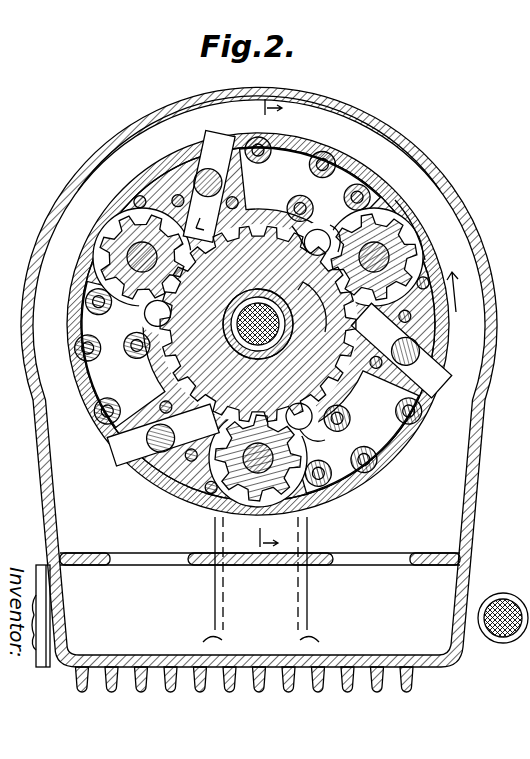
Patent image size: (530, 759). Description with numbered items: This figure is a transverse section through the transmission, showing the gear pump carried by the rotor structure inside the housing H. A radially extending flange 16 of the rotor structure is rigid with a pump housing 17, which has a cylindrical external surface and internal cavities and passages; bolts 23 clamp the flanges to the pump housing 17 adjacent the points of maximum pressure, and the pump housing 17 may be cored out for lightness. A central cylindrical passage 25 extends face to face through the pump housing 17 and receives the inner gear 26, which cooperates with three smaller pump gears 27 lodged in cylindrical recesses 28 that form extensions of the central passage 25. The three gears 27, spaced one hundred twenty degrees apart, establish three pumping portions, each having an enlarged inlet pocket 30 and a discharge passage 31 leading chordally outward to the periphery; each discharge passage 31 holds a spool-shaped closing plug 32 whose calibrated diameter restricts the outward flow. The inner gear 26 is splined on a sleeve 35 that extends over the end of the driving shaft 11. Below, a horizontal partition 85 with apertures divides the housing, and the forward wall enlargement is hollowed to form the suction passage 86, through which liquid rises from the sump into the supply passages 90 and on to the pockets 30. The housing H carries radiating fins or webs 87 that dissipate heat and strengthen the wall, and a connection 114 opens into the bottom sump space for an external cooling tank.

The housing H is at (62, 187).
The driving shaft 11 is at (343, 373).
The radially extending flange 16 is at (395, 197).
The pump housing 17 is at (410, 238).
The bolts 23 is at (324, 156).
The central cylindrical passage 25 is at (288, 215).
The inner gear 26 is at (326, 228).
The pump gears 27 is at (112, 236).
The recesses 28 is at (132, 216).
The inlet chamber or pocket 30 is at (142, 314).
The discharge passage 31 is at (217, 146).
The spool-shaped closing plug 32 is at (222, 182).
The sleeve 35 is at (234, 340).
The horizontal partition 85 is at (207, 563).
The suction passage 86 is at (277, 590).
The radiating fins or webs 87 is at (317, 683).
The supply passages 90 is at (320, 441).
The connection 114 is at (500, 600).